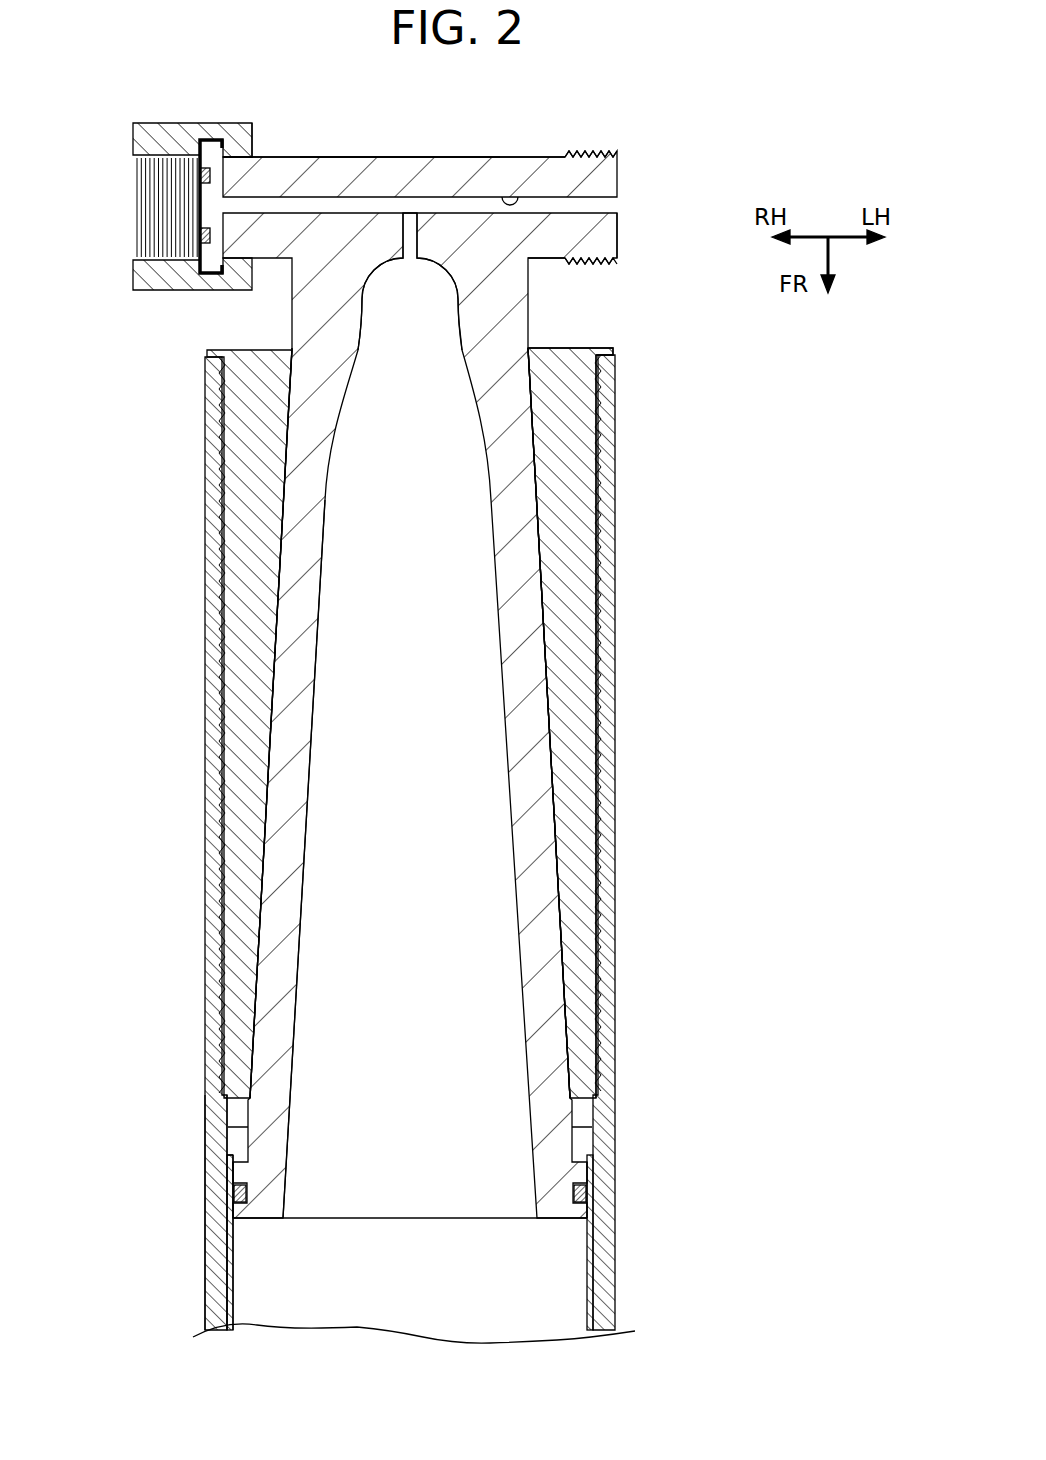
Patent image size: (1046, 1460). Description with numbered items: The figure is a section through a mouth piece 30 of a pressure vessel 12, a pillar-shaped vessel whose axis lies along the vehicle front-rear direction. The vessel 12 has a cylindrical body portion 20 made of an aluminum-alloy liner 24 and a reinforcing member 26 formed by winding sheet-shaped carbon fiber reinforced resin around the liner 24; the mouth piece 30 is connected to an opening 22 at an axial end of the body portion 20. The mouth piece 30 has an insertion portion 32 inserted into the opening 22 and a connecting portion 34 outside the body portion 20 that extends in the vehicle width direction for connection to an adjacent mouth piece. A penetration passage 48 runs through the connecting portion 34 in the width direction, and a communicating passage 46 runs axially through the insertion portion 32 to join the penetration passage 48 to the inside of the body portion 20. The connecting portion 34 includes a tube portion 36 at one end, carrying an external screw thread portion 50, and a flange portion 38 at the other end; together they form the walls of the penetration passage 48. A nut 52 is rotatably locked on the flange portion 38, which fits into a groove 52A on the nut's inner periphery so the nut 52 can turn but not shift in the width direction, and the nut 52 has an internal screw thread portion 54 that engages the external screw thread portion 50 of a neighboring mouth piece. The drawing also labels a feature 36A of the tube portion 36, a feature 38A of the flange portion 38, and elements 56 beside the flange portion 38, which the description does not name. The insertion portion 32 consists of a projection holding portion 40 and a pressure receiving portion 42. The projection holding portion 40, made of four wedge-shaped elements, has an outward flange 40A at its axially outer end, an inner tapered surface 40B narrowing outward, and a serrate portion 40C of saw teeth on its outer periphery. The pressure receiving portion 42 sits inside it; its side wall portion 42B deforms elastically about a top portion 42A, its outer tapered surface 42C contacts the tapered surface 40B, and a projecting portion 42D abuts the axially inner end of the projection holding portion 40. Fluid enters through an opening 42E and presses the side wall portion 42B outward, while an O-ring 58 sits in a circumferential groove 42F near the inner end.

The pressure vessel 12 is at (560, 127).
The body portion 20 is at (130, 1242).
The opening 22 is at (236, 362).
The liner 24 is at (227, 1302).
The reinforcing member 26 is at (217, 1260).
The mouth piece 30 is at (449, 157).
The insertion portion 32 is at (688, 745).
The connecting portion 34 is at (397, 168).
The tube portion 36 is at (605, 181).
The lower surface of flange 36A is at (617, 231).
The flange portion 38 is at (212, 140).
The seal surface 38A is at (202, 224).
The projection holding portion 40 is at (585, 757).
The flange 40A is at (605, 348).
The tapered surface 40B is at (522, 510).
The serrate portion 40C is at (603, 672).
The pressure receiving portion 42 is at (538, 823).
The top portion 42A is at (362, 273).
The side wall portion 42B is at (293, 618).
The tapered surface 42C is at (270, 687).
The projecting portion 42D is at (230, 1118).
The opening 42E is at (290, 1194).
The groove 42F is at (233, 1180).
The communicating passage 46 is at (412, 258).
The penetration passage 48 is at (511, 197).
The external screw thread portion 50 is at (603, 146).
The nut 52 is at (133, 139).
The groove 52A is at (227, 156).
The internal screw thread portion 54 is at (137, 176).
The O-ring 56 is at (205, 238).
The O-ring 58 is at (235, 1196).